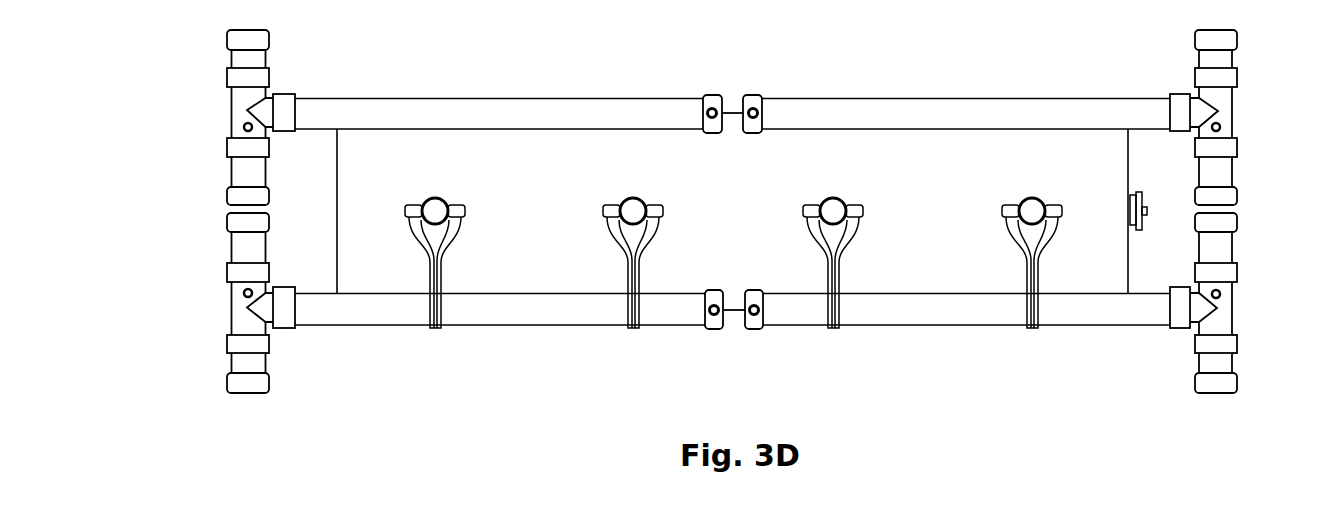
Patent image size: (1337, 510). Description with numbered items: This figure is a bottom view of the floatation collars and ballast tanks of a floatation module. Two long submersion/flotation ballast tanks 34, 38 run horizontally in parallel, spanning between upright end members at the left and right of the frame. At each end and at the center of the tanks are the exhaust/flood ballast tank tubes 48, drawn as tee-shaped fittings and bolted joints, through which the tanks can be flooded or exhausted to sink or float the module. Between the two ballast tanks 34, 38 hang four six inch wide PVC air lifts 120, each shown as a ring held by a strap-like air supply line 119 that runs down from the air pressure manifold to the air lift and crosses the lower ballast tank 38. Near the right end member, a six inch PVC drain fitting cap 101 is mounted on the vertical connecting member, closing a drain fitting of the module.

The submersion/flotation ballast tank 34 is at (732, 93).
The submersion/flotation ballast tank 38 is at (732, 333).
The exhaust/flood ballast tank tube 48 is at (748, 316).
The PVC drain fitting cap 101 is at (1147, 212).
The air supply line from air pressure manifold to air lift 119 is at (733, 266).
The PVC air lift 120 is at (705, 192).